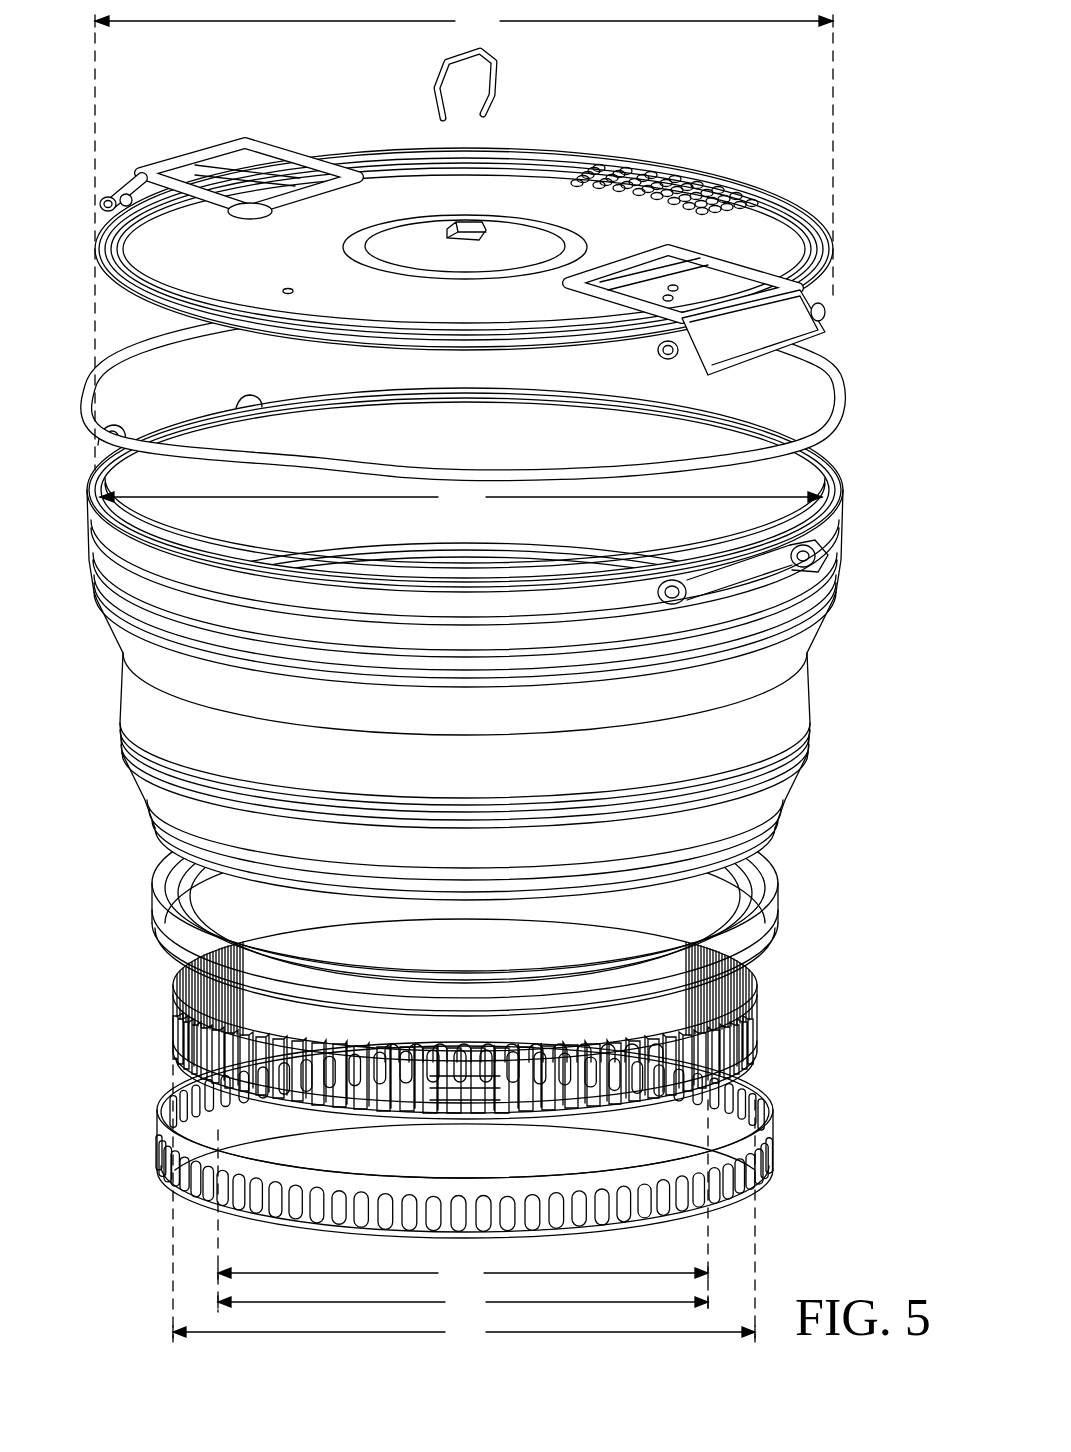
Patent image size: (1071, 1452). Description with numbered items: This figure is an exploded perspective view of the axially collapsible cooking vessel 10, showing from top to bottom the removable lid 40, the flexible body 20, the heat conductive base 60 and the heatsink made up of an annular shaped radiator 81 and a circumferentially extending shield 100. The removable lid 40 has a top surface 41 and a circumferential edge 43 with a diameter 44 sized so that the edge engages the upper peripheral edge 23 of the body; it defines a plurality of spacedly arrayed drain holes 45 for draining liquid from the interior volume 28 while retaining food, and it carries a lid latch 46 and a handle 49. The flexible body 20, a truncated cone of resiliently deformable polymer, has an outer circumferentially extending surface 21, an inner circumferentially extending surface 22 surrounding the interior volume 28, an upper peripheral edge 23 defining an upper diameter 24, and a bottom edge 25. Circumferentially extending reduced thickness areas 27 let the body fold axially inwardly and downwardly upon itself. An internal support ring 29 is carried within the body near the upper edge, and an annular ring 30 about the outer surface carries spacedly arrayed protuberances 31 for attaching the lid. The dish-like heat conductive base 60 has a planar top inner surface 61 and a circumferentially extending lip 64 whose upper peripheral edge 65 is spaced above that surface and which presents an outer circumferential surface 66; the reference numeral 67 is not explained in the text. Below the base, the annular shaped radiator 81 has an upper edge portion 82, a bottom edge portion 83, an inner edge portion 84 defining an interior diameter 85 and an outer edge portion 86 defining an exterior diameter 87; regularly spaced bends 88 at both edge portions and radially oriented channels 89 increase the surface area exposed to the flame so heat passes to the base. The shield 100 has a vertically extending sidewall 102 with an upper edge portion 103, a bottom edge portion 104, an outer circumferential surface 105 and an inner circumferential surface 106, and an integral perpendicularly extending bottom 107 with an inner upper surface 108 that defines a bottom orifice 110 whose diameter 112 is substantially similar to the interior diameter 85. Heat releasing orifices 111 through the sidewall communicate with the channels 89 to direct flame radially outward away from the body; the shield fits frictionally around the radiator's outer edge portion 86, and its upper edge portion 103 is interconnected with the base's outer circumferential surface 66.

The axially collapsible cooking vessel 10 is at (805, 82).
The flexible body 20 is at (127, 697).
The outer circumferentially extending surface 21 is at (651, 753).
The inner circumferentially extending surface 22 is at (260, 543).
The upper peripheral edge 23 is at (792, 455).
The upper diameter 24 is at (461, 498).
The bottom edge 25 is at (770, 835).
The reduced thickness areas 27 is at (790, 700).
The interior volume 28 is at (607, 527).
The internal support ring 29 is at (838, 362).
The annular ring 30 is at (837, 520).
The protuberances 31 is at (108, 430).
The removable lid 40 is at (548, 148).
The top surface 41 is at (470, 185).
The circumferential edge 43 is at (108, 258).
The diameter 44 is at (464, 238).
The drain holes 45 is at (662, 198).
The lid latch 46 is at (135, 175).
The handle 49 is at (500, 60).
The heat conductive base 60 is at (803, 924).
The planar top inner surface 61 is at (485, 943).
The circumferentially extending lip 64 is at (157, 873).
The upper peripheral edge 65 is at (217, 943).
The outer circumferential surface 66 is at (353, 963).
The outer wall 67 is at (557, 1007).
The annular shaped radiator 81 is at (753, 1010).
The upper edge portion 82 is at (753, 993).
The bottom edge portion 83 is at (753, 1060).
The inner circumferentially extending edge portion 84 is at (250, 1035).
The interior diameter 85 is at (463, 1303).
The outer circumferentially extending edge portion 86 is at (750, 1043).
The exterior diameter 87 is at (464, 1205).
The regularly spaced bends 88 is at (413, 1112).
The regularly spaced channels 89 is at (357, 1104).
The circumferentially extending shield 100 is at (795, 1146).
The vertically extending sidewall 102 is at (158, 1132).
The upper edge portion 103 is at (447, 1197).
The bottom edge portion 104 is at (617, 1233).
The outer circumferential surface 105 is at (345, 1185).
The inner circumferential surface 106 is at (187, 1083).
The perpendicularly extending bottom 107 is at (320, 1240).
The inner upper surface 108 is at (245, 1140).
The bottom orifice 110 is at (490, 1110).
The heat releasing orifices 111 is at (267, 1207).
The diameter 112 is at (463, 1206).